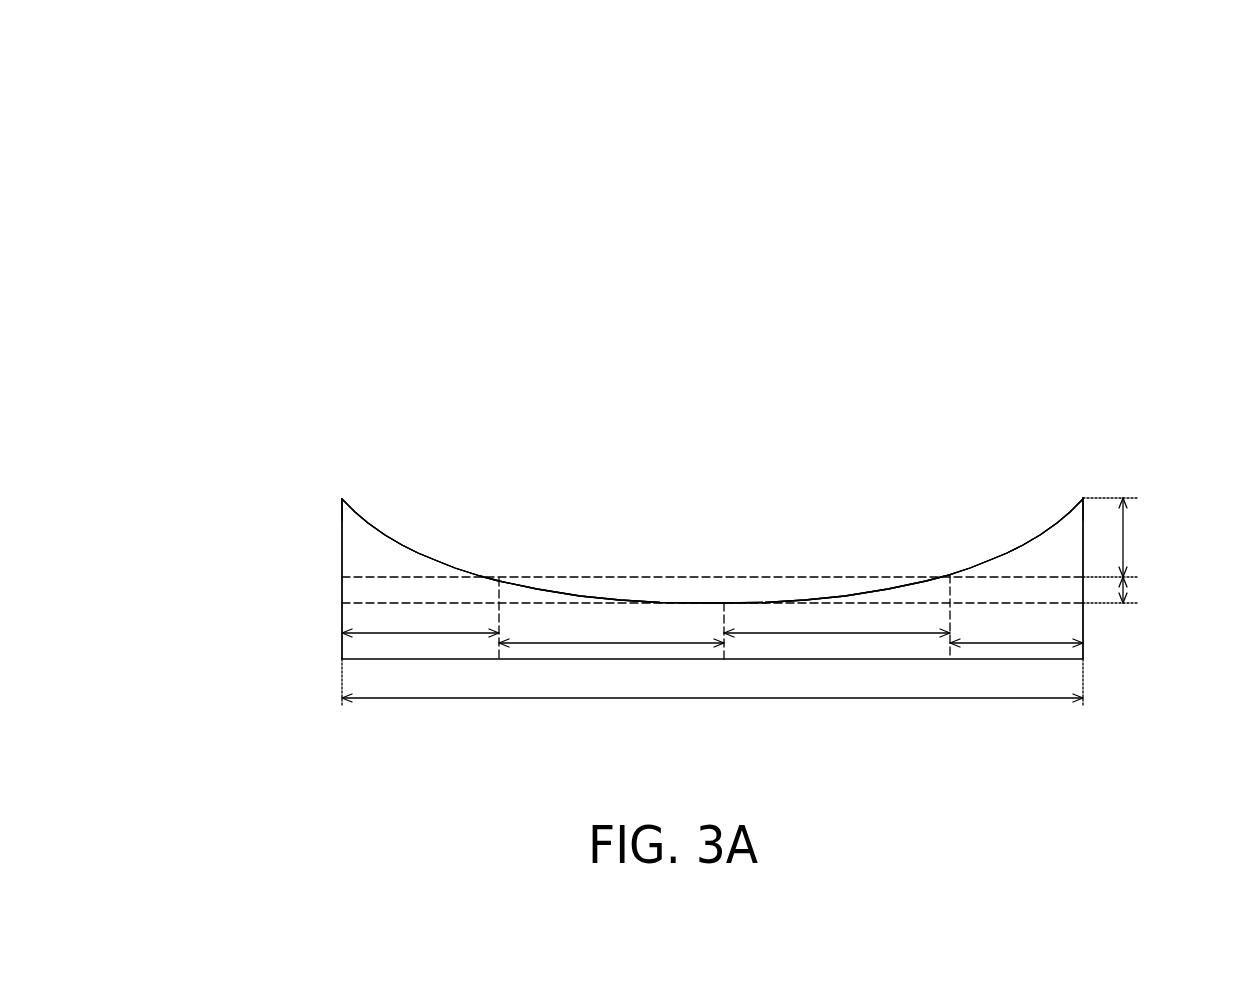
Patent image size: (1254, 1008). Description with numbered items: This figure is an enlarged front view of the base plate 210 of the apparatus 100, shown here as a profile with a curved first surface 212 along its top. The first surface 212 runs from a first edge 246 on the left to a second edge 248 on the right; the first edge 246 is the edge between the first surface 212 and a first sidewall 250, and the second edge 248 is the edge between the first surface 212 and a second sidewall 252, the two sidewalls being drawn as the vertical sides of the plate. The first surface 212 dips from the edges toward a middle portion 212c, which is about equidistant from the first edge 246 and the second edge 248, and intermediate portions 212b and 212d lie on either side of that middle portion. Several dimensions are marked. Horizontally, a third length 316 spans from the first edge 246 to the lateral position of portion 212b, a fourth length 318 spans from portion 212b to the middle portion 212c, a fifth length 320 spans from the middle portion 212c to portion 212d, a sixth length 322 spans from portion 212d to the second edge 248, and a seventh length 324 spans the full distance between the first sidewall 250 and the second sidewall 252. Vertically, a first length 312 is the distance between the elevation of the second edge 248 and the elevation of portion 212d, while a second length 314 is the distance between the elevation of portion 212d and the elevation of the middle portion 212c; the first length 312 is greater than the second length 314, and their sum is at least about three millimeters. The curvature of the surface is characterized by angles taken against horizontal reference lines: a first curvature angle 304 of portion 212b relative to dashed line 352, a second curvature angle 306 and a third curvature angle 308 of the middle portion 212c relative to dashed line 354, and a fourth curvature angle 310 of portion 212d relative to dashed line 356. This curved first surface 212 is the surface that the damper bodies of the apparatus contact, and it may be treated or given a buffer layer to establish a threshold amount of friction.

The assembly 100 is at (118, 102).
The base plate 210 is at (358, 563).
The first surface 212 is at (435, 560).
The portion of the first surface 212b is at (499, 579).
The middle portion of the first surface 212c is at (724, 603).
The portion of the first surface 212d is at (950, 575).
The first edge 246 is at (342, 499).
The second edge 248 is at (1083, 498).
The first sidewall 250 is at (340, 626).
The second sidewall 252 is at (1083, 623).
The first curvature angle 304 is at (462, 572).
The second curvature angle 306 is at (574, 596).
The third curvature angle 308 is at (857, 595).
The fourth curvature angle 310 is at (983, 563).
The first length 312 is at (1123, 532).
The second length 314 is at (1123, 590).
The third length 316 is at (416, 633).
The fourth length 318 is at (593, 643).
The fifth length 320 is at (858, 633).
The sixth length 322 is at (1022, 643).
The seventh length 324 is at (710, 698).
The dashed line 352 is at (352, 577).
The dashed line 354 is at (352, 603).
The dashed line 356 is at (1057, 573).